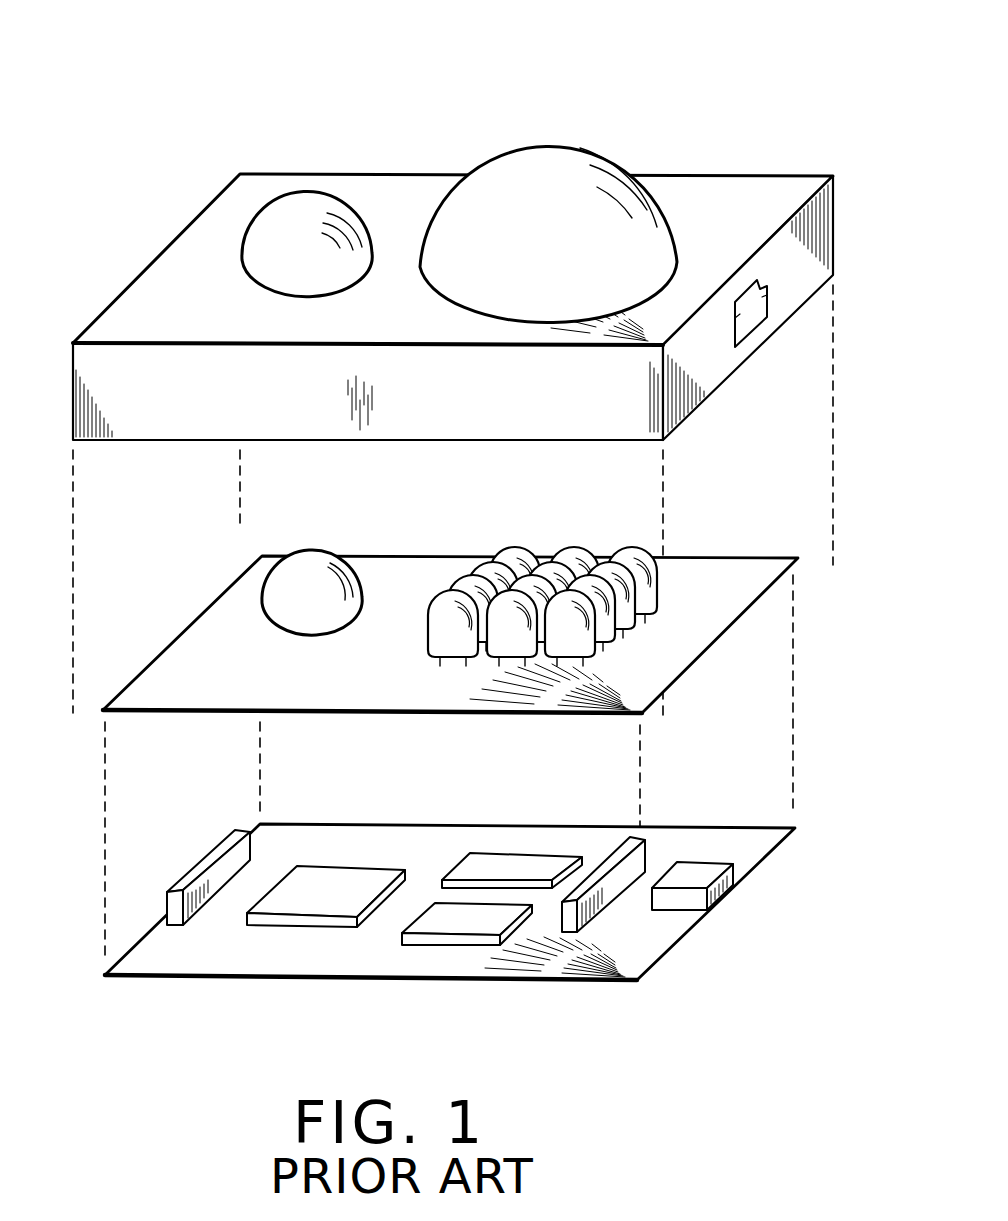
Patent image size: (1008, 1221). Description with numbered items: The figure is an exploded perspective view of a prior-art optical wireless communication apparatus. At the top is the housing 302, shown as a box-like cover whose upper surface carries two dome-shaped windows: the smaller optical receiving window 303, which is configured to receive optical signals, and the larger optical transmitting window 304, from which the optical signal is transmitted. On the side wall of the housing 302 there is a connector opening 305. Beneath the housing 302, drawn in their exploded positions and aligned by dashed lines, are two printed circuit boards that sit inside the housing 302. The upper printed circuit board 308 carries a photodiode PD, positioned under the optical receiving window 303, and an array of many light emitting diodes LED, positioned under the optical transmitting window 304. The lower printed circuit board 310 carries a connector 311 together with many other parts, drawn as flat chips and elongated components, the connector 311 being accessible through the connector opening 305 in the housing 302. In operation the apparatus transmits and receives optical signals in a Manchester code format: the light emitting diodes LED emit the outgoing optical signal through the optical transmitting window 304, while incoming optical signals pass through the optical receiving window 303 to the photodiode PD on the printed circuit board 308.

The housing 302 is at (143, 267).
The optical receiving window 303 is at (323, 197).
The optical transmitting window 304 is at (623, 160).
The connector opening 305 is at (747, 317).
The printed circuit board 308 is at (713, 557).
The printed circuit board 310 is at (687, 825).
The connector 311 is at (680, 903).
The photodiode PD is at (348, 568).
The light emitting diodes LED is at (617, 545).